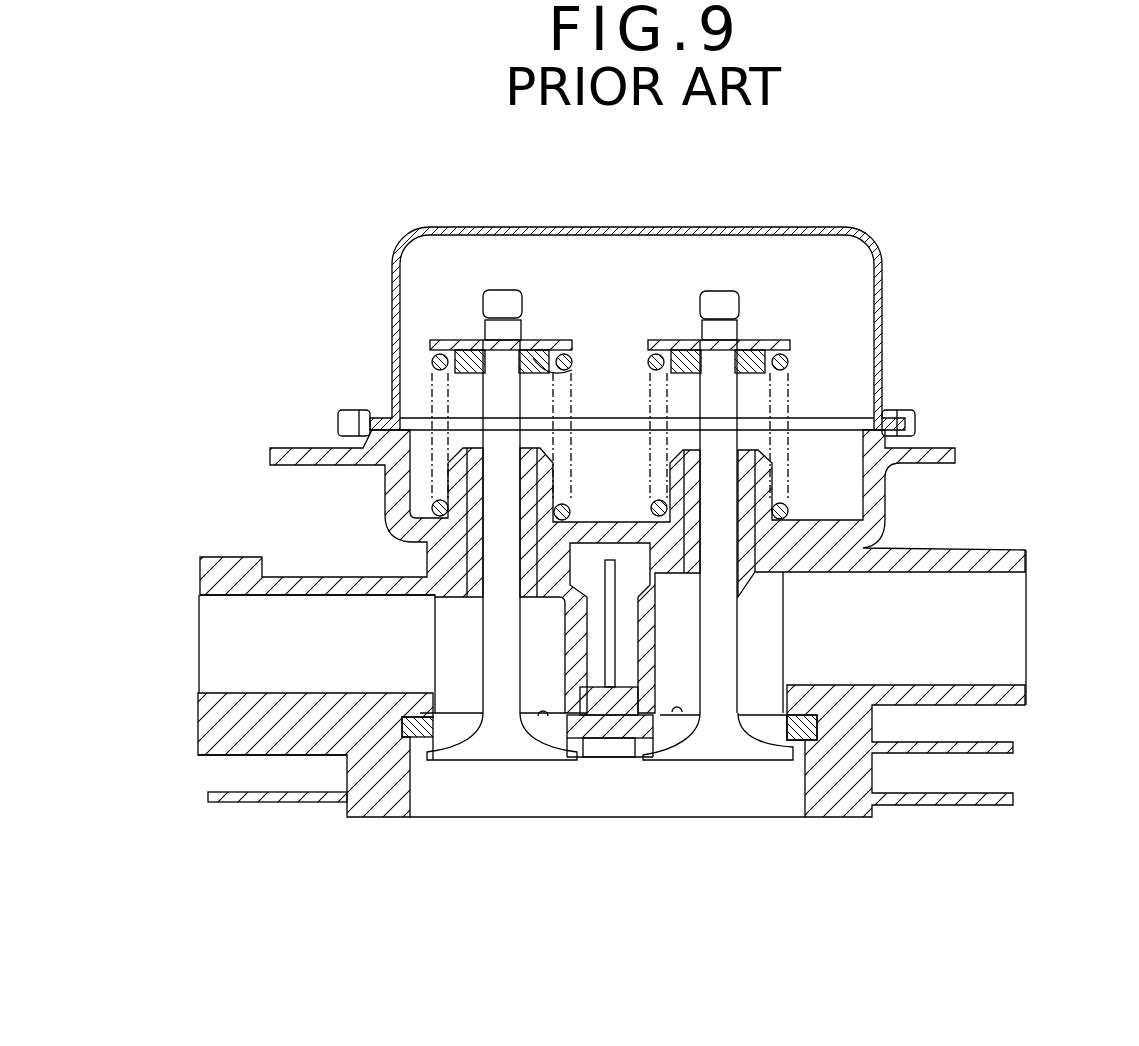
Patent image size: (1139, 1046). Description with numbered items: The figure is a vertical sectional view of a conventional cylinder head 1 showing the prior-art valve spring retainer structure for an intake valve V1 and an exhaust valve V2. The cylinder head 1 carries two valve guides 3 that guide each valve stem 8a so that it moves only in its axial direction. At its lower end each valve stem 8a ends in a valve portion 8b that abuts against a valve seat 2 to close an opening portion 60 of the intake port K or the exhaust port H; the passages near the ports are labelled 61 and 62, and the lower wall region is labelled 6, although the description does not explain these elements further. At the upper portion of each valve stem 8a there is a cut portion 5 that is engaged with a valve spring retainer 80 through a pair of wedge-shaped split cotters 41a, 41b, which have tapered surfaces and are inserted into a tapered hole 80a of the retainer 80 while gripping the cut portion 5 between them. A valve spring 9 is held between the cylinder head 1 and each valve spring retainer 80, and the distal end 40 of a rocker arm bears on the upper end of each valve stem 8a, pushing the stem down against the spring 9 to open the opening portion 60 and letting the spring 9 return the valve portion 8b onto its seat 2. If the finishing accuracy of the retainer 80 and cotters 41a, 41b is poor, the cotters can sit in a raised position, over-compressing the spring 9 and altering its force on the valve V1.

The cylinder head 1 is at (978, 458).
The valve seat 2 is at (424, 755).
The valve guide 3 is at (428, 553).
The cut portion 5 is at (493, 342).
The bottom wall 6 is at (262, 742).
The valve stem 8a is at (497, 406).
The valve portion 8b is at (500, 745).
The valve spring 9 is at (436, 364).
The distal end of rocker arm 40 is at (503, 300).
The split cotter 41a is at (470, 345).
The split cotter 41b is at (530, 343).
The opening portion 60 is at (542, 716).
The inlet passage 61 is at (332, 693).
The lower chamber 62 is at (462, 690).
The valve spring retainer 80 is at (431, 341).
The tapered hole 80a is at (572, 370).
The intake port K is at (268, 657).
The exhaust port H is at (966, 638).
The intake valve V1 is at (480, 644).
The exhaust valve V2 is at (715, 666).